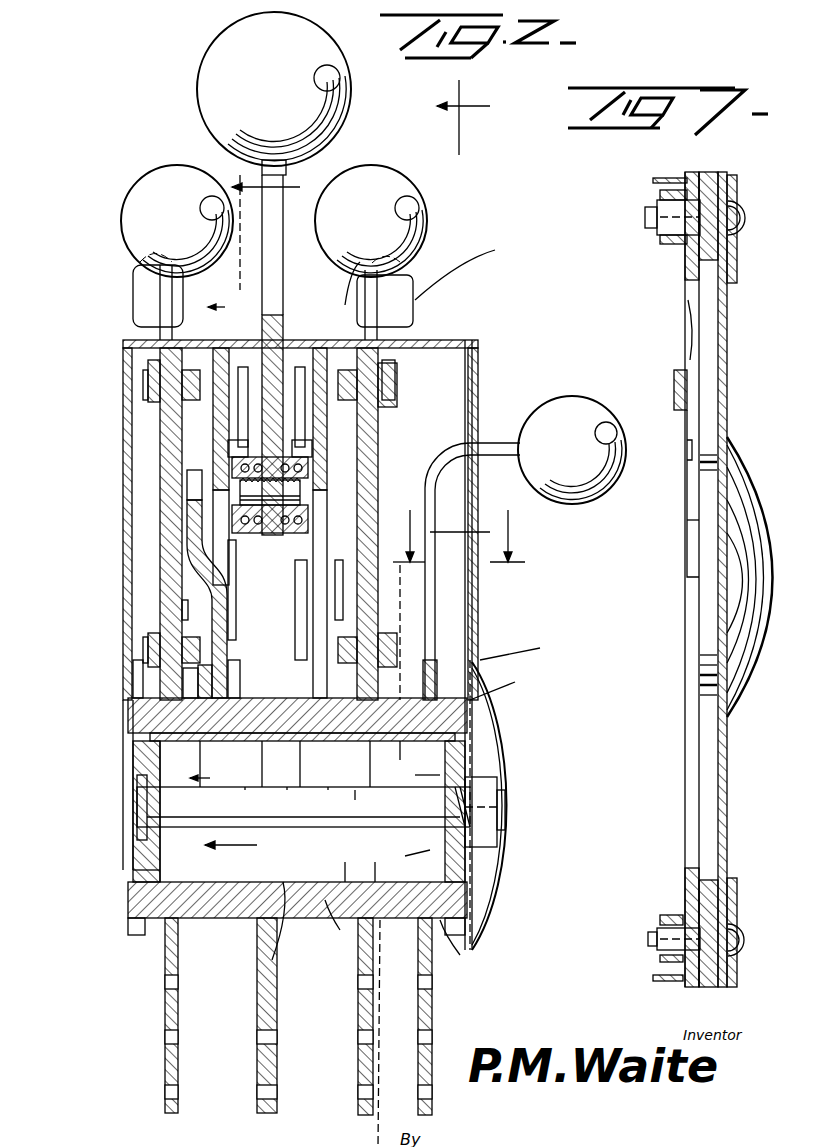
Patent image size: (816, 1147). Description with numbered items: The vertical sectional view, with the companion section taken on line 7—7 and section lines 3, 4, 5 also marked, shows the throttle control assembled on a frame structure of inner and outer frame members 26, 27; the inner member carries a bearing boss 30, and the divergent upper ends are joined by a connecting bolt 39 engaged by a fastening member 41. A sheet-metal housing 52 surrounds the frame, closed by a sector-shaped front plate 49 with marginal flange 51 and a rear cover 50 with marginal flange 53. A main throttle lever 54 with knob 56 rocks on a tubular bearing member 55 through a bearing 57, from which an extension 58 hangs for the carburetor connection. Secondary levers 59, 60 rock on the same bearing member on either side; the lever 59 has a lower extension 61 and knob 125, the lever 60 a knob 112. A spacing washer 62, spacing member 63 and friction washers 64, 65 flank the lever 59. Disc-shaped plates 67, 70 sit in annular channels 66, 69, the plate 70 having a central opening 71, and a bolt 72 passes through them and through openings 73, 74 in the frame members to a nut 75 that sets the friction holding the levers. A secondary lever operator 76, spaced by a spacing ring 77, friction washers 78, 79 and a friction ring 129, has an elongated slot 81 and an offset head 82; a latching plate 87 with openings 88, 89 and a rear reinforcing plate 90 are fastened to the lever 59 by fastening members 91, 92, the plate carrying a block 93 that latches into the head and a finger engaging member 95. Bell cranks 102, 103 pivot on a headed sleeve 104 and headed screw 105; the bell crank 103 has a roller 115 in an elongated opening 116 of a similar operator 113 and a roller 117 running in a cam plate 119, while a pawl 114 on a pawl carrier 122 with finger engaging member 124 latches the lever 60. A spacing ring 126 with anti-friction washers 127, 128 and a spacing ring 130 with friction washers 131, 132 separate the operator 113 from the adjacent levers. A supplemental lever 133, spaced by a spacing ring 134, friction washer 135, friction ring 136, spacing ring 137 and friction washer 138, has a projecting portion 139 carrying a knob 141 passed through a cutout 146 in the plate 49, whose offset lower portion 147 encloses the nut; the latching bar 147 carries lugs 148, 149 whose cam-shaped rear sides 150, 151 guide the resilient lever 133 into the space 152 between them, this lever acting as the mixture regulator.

In FIG. 2, the section line 3 is at (474, 117).
In FIG. 2, the section line 4 is at (261, 515).
In FIG. 2, the section line 5 is at (207, 546).
In FIG. 2, the section line 7— 7 is at (451, 816).
In FIG. 2, the inner frame member 26 is at (133, 687).
In FIG. 2, the outer frame member 27 is at (472, 648).
In FIG. 7, the outer frame member 27 is at (710, 805).
In FIG. 2, the bearing boss 30 is at (128, 716).
In FIG. 7, the connecting bolt 39 is at (678, 230).
In FIG. 7, the fastening member 41 is at (742, 200).
In FIG. 7, the front plate 49 is at (727, 385).
In FIG. 2, the rear cover 50 is at (123, 408).
In FIG. 2, the marginal flange 51 is at (478, 340).
In FIG. 2, the housing 52 is at (438, 340).
In FIG. 2, the marginal flange 53 is at (125, 340).
In FIG. 2, the main throttle lever 54 is at (283, 245).
In FIG. 2, the tubular bearing member 55 is at (383, 764).
In FIG. 2, the knob 56 is at (350, 110).
In FIG. 2, the bearing 57 is at (270, 935).
In FIG. 2, the extension 58 is at (277, 1014).
In FIG. 2, the secondary lever 59 is at (232, 535).
In FIG. 2, the secondary lever 60 is at (378, 480).
In FIG. 2, the lower extension 61 is at (165, 1010).
In FIG. 2, the spacing washer 62 is at (133, 748).
In FIG. 2, the spacing member 63 is at (190, 764).
In FIG. 2, the friction washer 64 is at (133, 770).
In FIG. 2, the friction washer 65 is at (137, 795).
In FIG. 2, the annular channel 66 is at (163, 865).
In FIG. 2, the disc-shaped plate 67 is at (128, 890).
In FIG. 2, the annular channel 69 is at (403, 753).
In FIG. 2, the outer disc-shaped plate 70 is at (414, 774).
In FIG. 2, the central opening 71 is at (404, 856).
In FIG. 2, the bolt 72 is at (305, 822).
In FIG. 2, the opening 73 is at (128, 850).
In FIG. 2, the opening 74 is at (470, 775).
In FIG. 2, the nut 75 is at (485, 805).
In FIG. 2, the secondary lever operator 76 is at (200, 575).
In FIG. 2, the spacing ring 77 is at (262, 764).
In FIG. 2, the friction washer 78 is at (243, 679).
In FIG. 2, the friction washer 79 is at (198, 681).
In FIG. 2, the elongated slot 81 is at (228, 628).
In FIG. 2, the head 82 is at (240, 492).
In FIG. 2, the latching plate 87 is at (187, 560).
In FIG. 2, the upper elongated opening 88 is at (160, 420).
In FIG. 2, the lower elongated opening 89 is at (183, 685).
In FIG. 2, the rear reinforcing plate 90 is at (182, 612).
In FIG. 2, the upper fastening member 91 is at (143, 380).
In FIG. 2, the lower fastening member 92 is at (143, 650).
In FIG. 2, the block 93 is at (213, 458).
In FIG. 2, the finger engaging member 95 is at (133, 276).
In FIG. 2, the bell crank 102 is at (243, 367).
In FIG. 2, the bell crank 103 is at (300, 367).
In FIG. 2, the headed sleeve 104 is at (240, 515).
In FIG. 2, the headed screw 105 is at (300, 460).
In FIG. 2, the knob 112 is at (385, 178).
In FIG. 2, the operator 113 is at (338, 595).
In FIG. 2, the dog or pawl 114 is at (308, 500).
In FIG. 2, the roller 115 is at (312, 662).
In FIG. 2, the elongated opening 116 is at (350, 667).
In FIG. 2, the roller 117 is at (322, 360).
In FIG. 2, the cam plate 119 is at (350, 268).
In FIG. 2, the pawl carrier 122 is at (385, 363).
In FIG. 2, the finger engaging member 124 is at (469, 264).
In FIG. 2, the knob 125 is at (150, 180).
In FIG. 2, the spacing ring 126 is at (305, 764).
In FIG. 2, the anti-friction washer 127 is at (287, 777).
In FIG. 2, the anti-friction washer 128 is at (328, 777).
In FIG. 2, the friction ring 129 is at (248, 777).
In FIG. 2, the spacing ring 130 is at (370, 803).
In FIG. 2, the friction washer 131 is at (332, 925).
In FIG. 2, the friction washer 132 is at (345, 860).
In FIG. 2, the supplemental lever 133 is at (505, 537).
In FIG. 7, the supplemental lever 133 is at (680, 355).
In FIG. 2, the spacing ring 134 is at (400, 925).
In FIG. 2, the friction washer 135 is at (375, 860).
In FIG. 2, the friction ring 136 is at (468, 949).
In FIG. 2, the spacing ring 137 is at (509, 684).
In FIG. 2, the friction washer 138 is at (524, 645).
In FIG. 2, the forwardly projecting portion 139 is at (498, 443).
In FIG. 2, the knob 141 is at (575, 398).
In FIG. 2, the cutout 146 is at (395, 380).
In FIG. 2, the latching bar 147 is at (508, 855).
In FIG. 7, the latching bar 147 is at (690, 700).
In FIG. 7, the lug 148 is at (687, 577).
In FIG. 7, the lug 149 is at (687, 450).
In FIG. 7, the cam-shaped rear side 150 is at (685, 610).
In FIG. 7, the cam-shaped rear side 151 is at (674, 415).
In FIG. 7, the space 152 is at (687, 520).